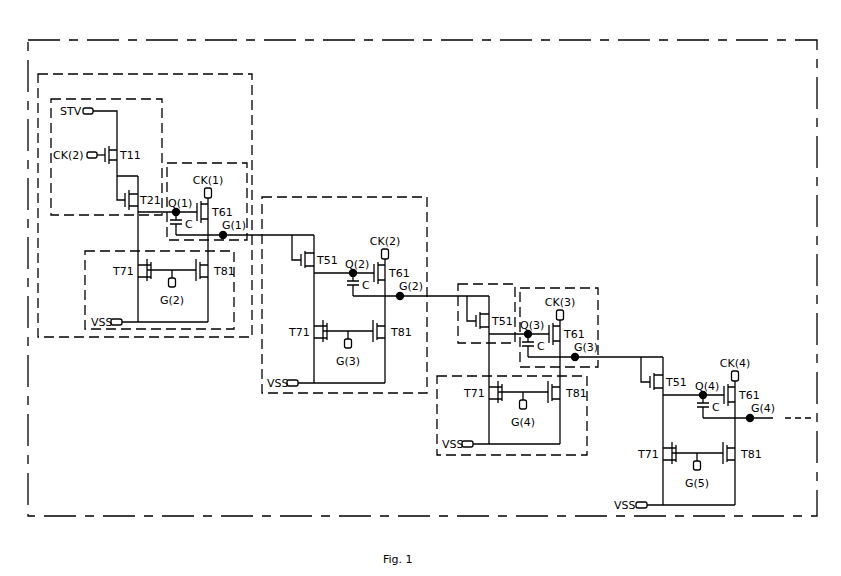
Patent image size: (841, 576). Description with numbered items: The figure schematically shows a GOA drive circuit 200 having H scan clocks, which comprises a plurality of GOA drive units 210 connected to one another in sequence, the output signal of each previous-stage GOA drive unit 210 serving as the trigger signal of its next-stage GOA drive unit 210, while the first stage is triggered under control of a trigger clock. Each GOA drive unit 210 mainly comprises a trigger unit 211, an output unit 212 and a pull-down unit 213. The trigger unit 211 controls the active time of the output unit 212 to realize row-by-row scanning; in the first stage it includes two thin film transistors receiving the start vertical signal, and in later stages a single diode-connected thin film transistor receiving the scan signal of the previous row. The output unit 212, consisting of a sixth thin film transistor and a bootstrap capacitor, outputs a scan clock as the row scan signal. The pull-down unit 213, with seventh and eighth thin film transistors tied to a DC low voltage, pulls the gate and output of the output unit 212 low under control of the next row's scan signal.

The GOA drive circuit 200 is at (489, 41).
The GOA drive unit 210 is at (150, 75).
The trigger unit 211 is at (106, 99).
The output unit 212 is at (207, 163).
The pull-down unit 213 is at (85, 290).